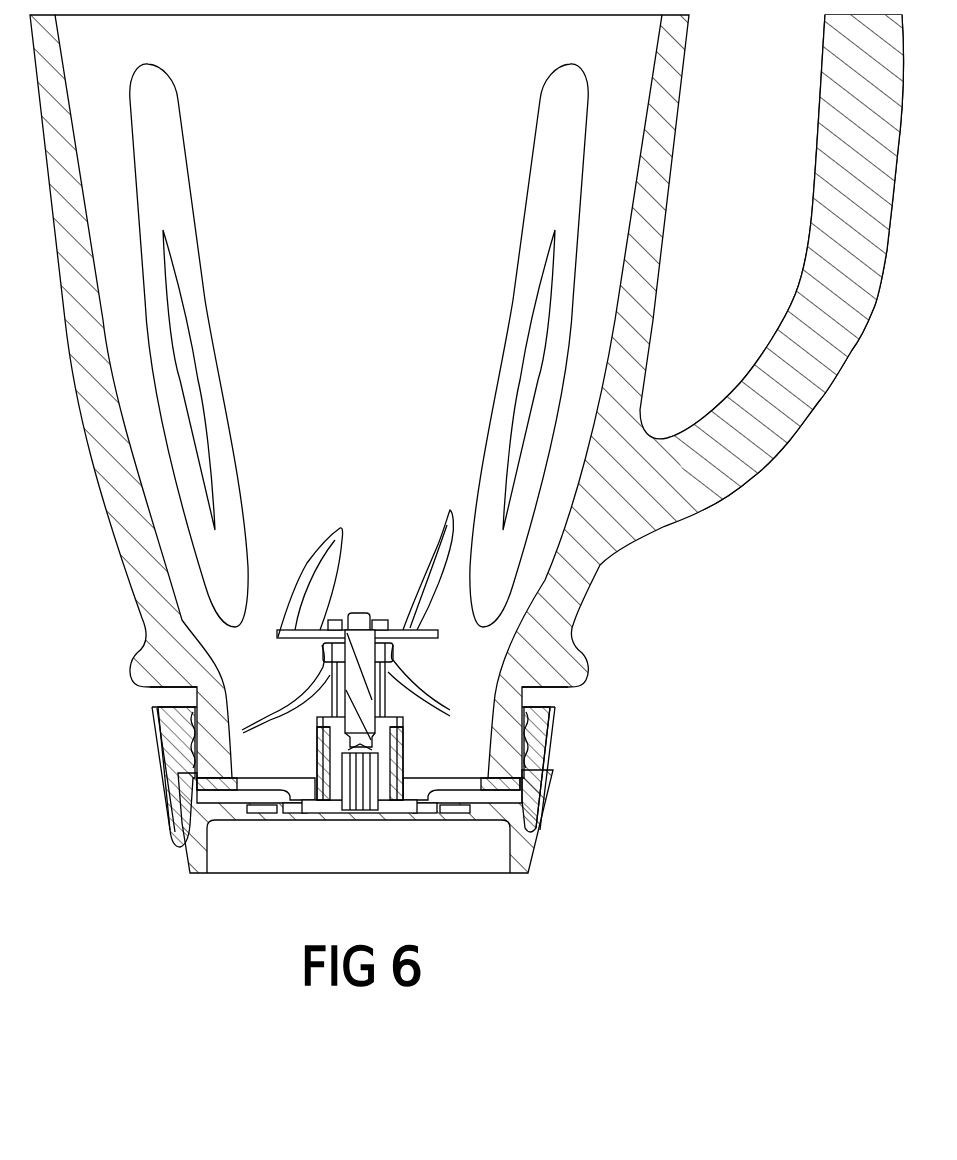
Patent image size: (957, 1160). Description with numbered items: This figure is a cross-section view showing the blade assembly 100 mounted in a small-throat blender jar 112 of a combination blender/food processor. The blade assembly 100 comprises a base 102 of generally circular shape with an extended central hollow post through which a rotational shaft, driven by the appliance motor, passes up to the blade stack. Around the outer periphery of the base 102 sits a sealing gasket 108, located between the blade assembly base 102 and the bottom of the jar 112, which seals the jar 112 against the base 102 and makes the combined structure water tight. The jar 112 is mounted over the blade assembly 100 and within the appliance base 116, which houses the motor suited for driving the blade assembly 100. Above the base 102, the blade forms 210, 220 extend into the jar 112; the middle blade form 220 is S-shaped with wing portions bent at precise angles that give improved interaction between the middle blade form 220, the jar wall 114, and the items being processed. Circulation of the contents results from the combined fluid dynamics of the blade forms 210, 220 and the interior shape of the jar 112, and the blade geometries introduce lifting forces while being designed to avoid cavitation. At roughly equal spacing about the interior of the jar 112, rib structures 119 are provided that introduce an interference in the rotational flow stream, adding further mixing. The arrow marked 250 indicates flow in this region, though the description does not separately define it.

The blender jar 112 is at (665, 152).
The rib structures 119 is at (187, 297).
The jar wall 114 is at (207, 702).
The appliance base 116 is at (157, 760).
The sealing gasket 108 is at (217, 793).
The base 102 is at (245, 823).
The blade assembly 100 is at (362, 617).
The middle blade form 220 is at (304, 522).
The blade form 210 is at (426, 509).
The lower blades 250 is at (430, 663).